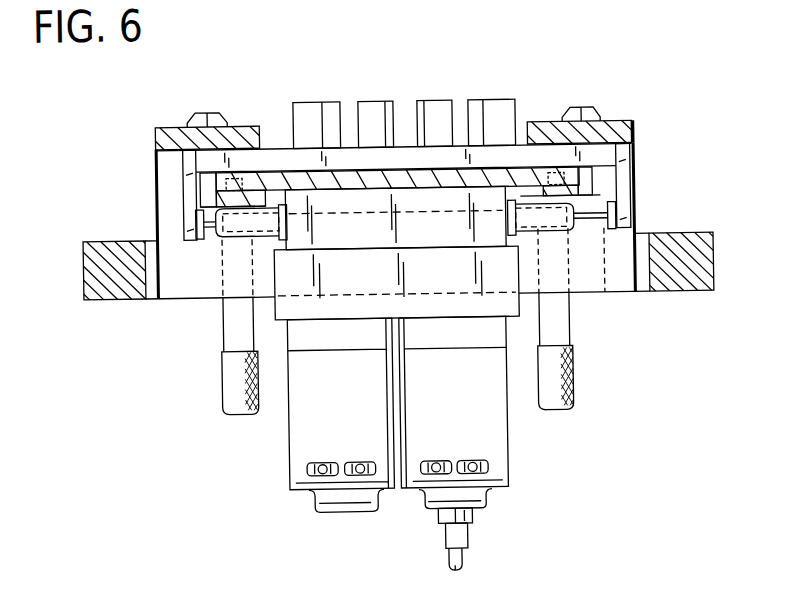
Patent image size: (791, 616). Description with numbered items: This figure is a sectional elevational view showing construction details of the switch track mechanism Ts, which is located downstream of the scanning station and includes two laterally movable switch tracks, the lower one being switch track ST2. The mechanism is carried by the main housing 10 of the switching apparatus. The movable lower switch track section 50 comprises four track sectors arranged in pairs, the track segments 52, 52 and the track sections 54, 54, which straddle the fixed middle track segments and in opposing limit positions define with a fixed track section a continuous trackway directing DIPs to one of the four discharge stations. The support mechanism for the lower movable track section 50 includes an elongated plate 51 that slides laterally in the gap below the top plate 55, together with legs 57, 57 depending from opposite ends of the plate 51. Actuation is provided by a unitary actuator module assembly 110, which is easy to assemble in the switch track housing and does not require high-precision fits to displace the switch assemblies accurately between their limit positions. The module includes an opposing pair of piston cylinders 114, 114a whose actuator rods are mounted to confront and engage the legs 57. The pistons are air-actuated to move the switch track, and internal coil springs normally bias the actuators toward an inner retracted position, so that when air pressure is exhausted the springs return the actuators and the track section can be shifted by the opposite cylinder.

The main housing 10 is at (696, 233).
The movable lower switch track section 50 is at (423, 172).
The elongated plate 51 is at (604, 155).
The track segments 52 is at (373, 100).
The track sections 54 is at (476, 101).
The top plate 55 is at (543, 125).
The legs 57 is at (624, 192).
The unitary actuator module assembly 110 is at (285, 490).
The piston cylinder 114 is at (571, 319).
The piston cylinder 114a is at (227, 327).
The switch track ST2 is at (204, 158).
The switch track mechanism Ts is at (635, 119).